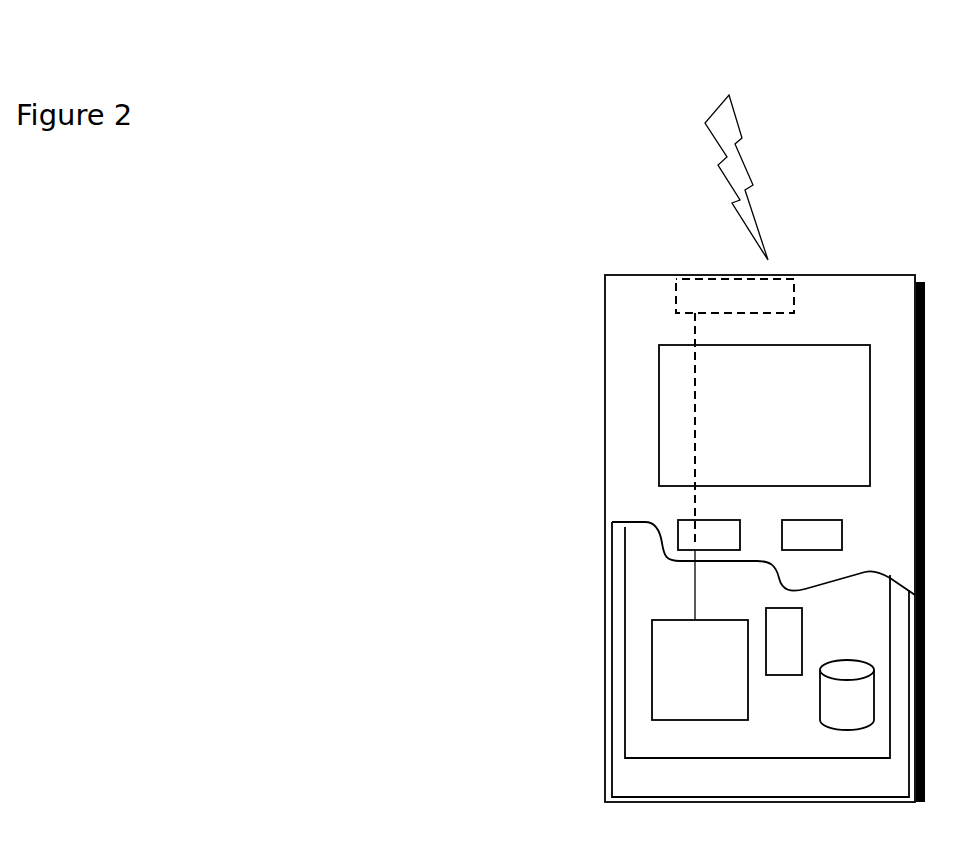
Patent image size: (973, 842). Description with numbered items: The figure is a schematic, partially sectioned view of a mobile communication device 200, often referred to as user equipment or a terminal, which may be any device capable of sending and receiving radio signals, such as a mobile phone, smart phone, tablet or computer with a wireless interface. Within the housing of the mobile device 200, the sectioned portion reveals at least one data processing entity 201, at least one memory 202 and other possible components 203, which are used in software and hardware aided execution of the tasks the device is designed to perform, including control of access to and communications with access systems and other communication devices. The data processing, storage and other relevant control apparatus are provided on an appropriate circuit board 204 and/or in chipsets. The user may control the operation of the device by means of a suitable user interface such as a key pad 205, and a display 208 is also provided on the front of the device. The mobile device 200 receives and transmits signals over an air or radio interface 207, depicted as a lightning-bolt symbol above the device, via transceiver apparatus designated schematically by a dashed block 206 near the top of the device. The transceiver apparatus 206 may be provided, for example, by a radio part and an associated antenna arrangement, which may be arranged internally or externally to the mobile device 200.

The communication device 200 is at (608, 319).
The data processing entity 201 is at (658, 653).
The memory 202 is at (841, 712).
The other possible components 203 is at (783, 625).
The circuit board 204 is at (651, 740).
The key pad 205 is at (683, 537).
The transceiver apparatus 206 is at (782, 290).
The air or radio interface 207 is at (770, 202).
The display 208 is at (677, 402).